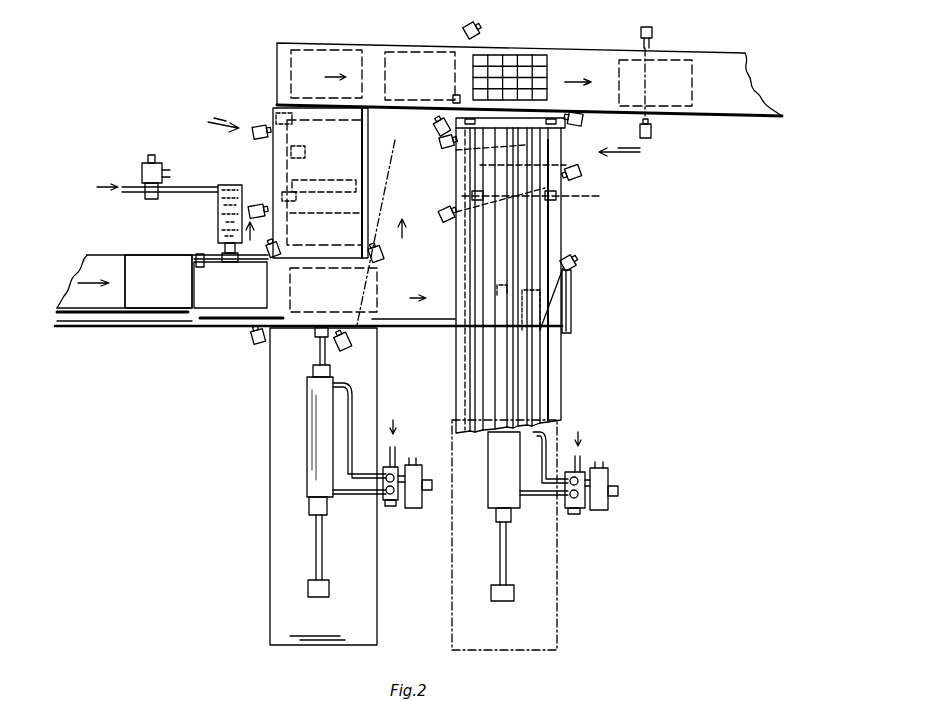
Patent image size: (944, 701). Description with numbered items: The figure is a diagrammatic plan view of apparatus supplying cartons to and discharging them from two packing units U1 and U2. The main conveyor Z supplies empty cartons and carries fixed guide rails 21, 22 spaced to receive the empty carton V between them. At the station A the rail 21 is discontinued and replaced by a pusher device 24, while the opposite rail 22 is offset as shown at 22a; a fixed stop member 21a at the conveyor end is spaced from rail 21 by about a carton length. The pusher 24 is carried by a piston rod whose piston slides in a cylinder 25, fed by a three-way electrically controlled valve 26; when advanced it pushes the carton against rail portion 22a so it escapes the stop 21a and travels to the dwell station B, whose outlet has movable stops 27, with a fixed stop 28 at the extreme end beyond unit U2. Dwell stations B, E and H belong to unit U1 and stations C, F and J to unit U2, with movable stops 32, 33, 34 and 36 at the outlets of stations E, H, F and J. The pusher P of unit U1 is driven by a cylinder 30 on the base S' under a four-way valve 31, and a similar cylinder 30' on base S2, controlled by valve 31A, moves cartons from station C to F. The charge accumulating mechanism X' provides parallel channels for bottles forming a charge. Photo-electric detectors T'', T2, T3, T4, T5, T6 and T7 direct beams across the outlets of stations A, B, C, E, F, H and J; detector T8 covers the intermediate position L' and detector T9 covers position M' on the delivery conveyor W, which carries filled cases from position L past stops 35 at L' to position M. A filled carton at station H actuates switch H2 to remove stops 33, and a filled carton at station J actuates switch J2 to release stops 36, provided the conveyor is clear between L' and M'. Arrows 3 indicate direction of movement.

The delivery conveyor W is at (584, 60).
The carton position L is at (326, 57).
The intermediate carton position L' is at (422, 60).
The carton position M is at (513, 54).
The carton position M' is at (679, 66).
The photo-electric detector T9 is at (652, 32).
The photo-electric detector T8 is at (478, 26).
The movable stops 35 is at (445, 118).
The movable stops 36 is at (560, 121).
The photo-electric detector T7 is at (584, 121).
The packing unit U2 is at (631, 155).
The packing unit U1 is at (217, 116).
The charge accumulating mechanism X' is at (537, 280).
The dwell station F is at (560, 234).
The dwell station J is at (583, 160).
The movable stops 34 is at (535, 203).
The switch J2 is at (468, 152).
The photo-electric detector T5 is at (445, 222).
The photo-electric detector T3 is at (576, 263).
The dwell station C is at (573, 307).
The fixed stop 28 is at (571, 292).
The dwell station H is at (364, 153).
The switch H2 is at (291, 148).
The movable stops 33 is at (283, 120).
The movable stops 32 is at (405, 182).
The dwell station E is at (360, 214).
The movable stops 27 is at (368, 301).
The feeler sensor 3 is at (330, 241).
The photo-electric detector T6 is at (259, 125).
The photo-electric detector T4 is at (256, 204).
The three-way electrically controlled valve 26 is at (142, 170).
The cylinder 25 is at (233, 190).
The fixed guide rail 22 is at (110, 316).
The empty carton V is at (98, 265).
The fixed guide rail 21 is at (150, 259).
The pusher device 24 is at (204, 262).
The fixed stop member 21a is at (231, 283).
The main conveyor Z is at (157, 318).
The station A is at (197, 320).
The dwell station B is at (278, 350).
The offset rail portion 22a is at (213, 324).
The photo-electric detector T'' is at (234, 347).
The photo-electric detector T2 is at (352, 342).
The pusher P is at (302, 323).
The base member S' is at (302, 486).
The cylinder 30 is at (304, 467).
The four-way valve 31 is at (422, 510).
The base member S2 is at (553, 540).
The cylinder 30' is at (492, 516).
The electrically actuated valve 31A is at (603, 486).